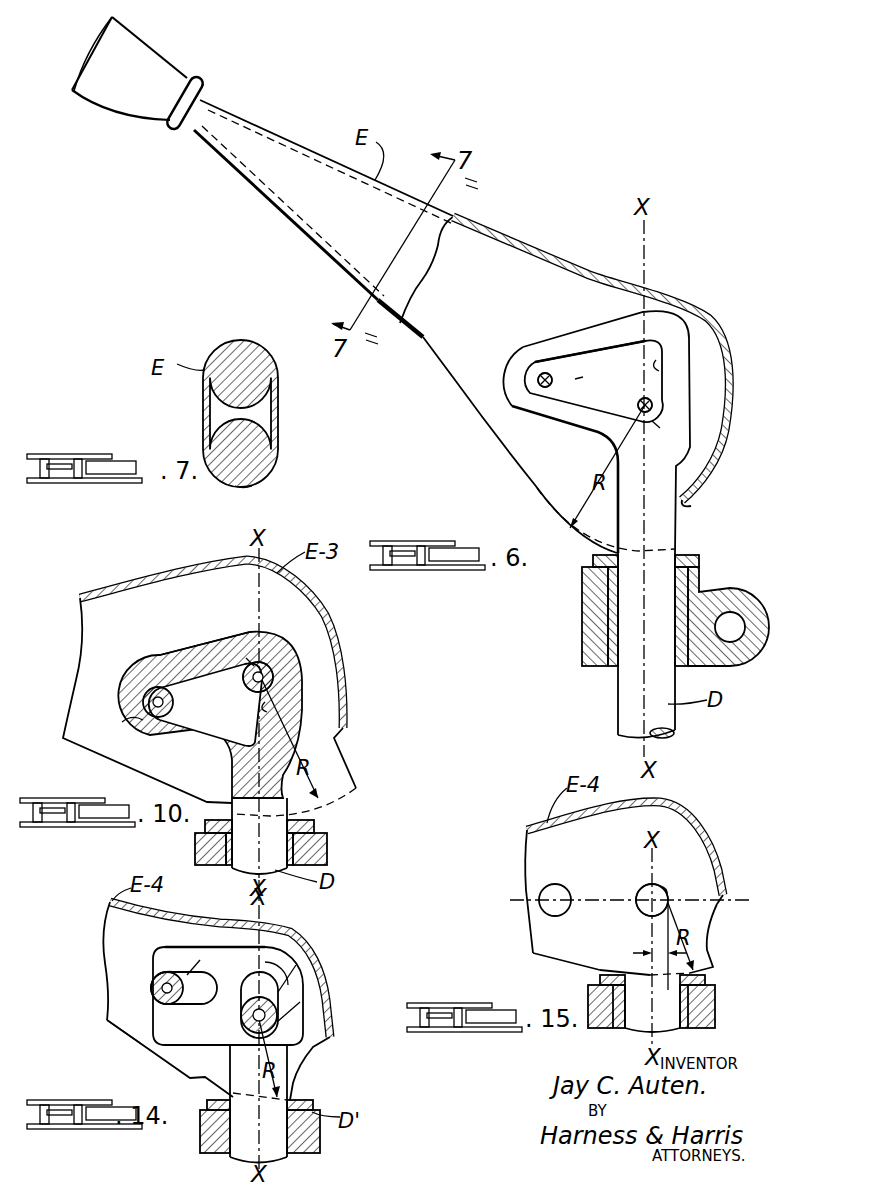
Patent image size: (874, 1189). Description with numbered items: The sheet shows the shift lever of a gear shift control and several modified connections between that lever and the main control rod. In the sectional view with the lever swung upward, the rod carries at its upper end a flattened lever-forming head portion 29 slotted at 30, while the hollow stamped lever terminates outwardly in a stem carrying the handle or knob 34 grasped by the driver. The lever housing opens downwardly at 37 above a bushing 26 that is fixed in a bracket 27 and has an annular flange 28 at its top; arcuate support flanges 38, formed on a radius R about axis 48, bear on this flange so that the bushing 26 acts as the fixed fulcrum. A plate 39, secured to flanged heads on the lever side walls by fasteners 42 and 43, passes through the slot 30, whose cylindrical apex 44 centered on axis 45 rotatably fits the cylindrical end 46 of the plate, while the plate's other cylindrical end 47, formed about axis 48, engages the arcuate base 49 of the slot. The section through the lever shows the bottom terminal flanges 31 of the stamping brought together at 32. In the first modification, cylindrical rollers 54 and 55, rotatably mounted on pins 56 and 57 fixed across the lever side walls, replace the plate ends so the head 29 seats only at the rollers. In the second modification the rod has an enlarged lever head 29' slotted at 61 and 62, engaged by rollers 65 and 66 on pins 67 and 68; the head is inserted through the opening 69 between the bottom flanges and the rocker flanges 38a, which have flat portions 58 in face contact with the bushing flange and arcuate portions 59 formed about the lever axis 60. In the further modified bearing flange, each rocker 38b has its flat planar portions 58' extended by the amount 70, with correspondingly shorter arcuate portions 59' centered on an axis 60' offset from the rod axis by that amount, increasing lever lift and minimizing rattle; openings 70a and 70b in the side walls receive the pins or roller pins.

In FIG. 6, the handle or knob 34 is at (165, 68).
In FIG. 6, the lever-forming head portion 29 is at (594, 351).
In FIG. 10, the lever-forming head portion 29 is at (205, 624).
In FIG. 6, the plate 39 is at (580, 376).
In FIG. 6, the slot 30 is at (617, 340).
In FIG. 10, the slot 30 is at (160, 745).
In FIG. 6, the axis 45 is at (543, 372).
In FIG. 10, the axis 45 is at (122, 722).
In FIG. 14, the axis 45 is at (158, 975).
In FIG. 6, the fastener 42 is at (538, 377).
In FIG. 6, the cylindrical end of plate 46 is at (538, 381).
In FIG. 6, the apex of slot 44 is at (532, 393).
In FIG. 6, the base of slot 49 is at (660, 366).
In FIG. 10, the base of slot 49 is at (268, 708).
In FIG. 6, the axis 48 is at (658, 402).
In FIG. 10, the axis 48 is at (280, 662).
In FIG. 6, the cylindrical end of plate 47 is at (656, 409).
In FIG. 6, the fastener 43 is at (658, 424).
In FIG. 6, the support flanges 38 is at (535, 488).
In FIG. 10, the support flanges 38 is at (355, 770).
In FIG. 6, the opening 37 is at (692, 506).
In FIG. 10, the opening 37 is at (330, 742).
In FIG. 15, the opening 37 is at (725, 900).
In FIG. 6, the annular flange 28 is at (593, 560).
In FIG. 10, the annular flange 28 is at (314, 827).
In FIG. 6, the bracket 27 is at (582, 618).
In FIG. 10, the bracket 27 is at (195, 841).
In FIG. 6, the bushing 26 is at (612, 640).
In FIG. 10, the bushing 26 is at (224, 851).
In FIG. 14, the bushing 26 is at (312, 1140).
In FIG. 15, the bushing 26 is at (610, 1028).
In FIG. 7, the junction of flanges 32 is at (243, 482).
In FIG. 7, the bottom terminal flanges 31 is at (248, 487).
In FIG. 10, the cylindrical roller 55 is at (253, 665).
In FIG. 10, the pin 57 is at (264, 665).
In FIG. 10, the cylindrical roller 54 is at (153, 687).
In FIG. 10, the pin 56 is at (173, 687).
In FIG. 14, the slot 61 is at (187, 975).
In FIG. 14, the enlarged lever head 29' is at (272, 926).
In FIG. 14, the slot 62 is at (305, 970).
In FIG. 14, the roller 66 is at (275, 985).
In FIG. 14, the pin 68 is at (277, 1017).
In FIG. 14, the pin 67 is at (158, 992).
In FIG. 14, the roller 65 is at (152, 998).
In FIG. 14, the lever axis 60 is at (228, 1010).
In FIG. 15, the lever axis 60 is at (631, 890).
In FIG. 14, the opening 69 is at (167, 1067).
In FIG. 15, the opening 69 is at (537, 958).
In FIG. 14, the flat or planar portions 58 is at (210, 1065).
In FIG. 14, the rocker flanges 38a is at (313, 1081).
In FIG. 14, the arcuate portions 59 is at (329, 1069).
In FIG. 15, the lever opening 70b is at (660, 887).
In FIG. 15, the axis 60' is at (698, 883).
In FIG. 15, the lever opening 70a is at (540, 897).
In FIG. 15, the offset amount 70 is at (653, 950).
In FIG. 15, the flat planar portions 58' is at (619, 984).
In FIG. 15, the rockers 38b is at (715, 967).
In FIG. 15, the arcuate portions 59' is at (736, 949).